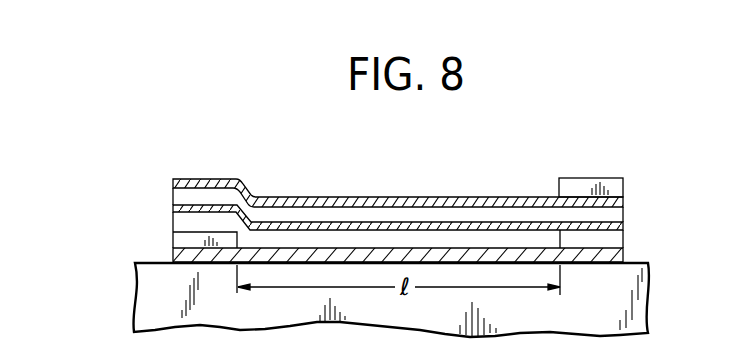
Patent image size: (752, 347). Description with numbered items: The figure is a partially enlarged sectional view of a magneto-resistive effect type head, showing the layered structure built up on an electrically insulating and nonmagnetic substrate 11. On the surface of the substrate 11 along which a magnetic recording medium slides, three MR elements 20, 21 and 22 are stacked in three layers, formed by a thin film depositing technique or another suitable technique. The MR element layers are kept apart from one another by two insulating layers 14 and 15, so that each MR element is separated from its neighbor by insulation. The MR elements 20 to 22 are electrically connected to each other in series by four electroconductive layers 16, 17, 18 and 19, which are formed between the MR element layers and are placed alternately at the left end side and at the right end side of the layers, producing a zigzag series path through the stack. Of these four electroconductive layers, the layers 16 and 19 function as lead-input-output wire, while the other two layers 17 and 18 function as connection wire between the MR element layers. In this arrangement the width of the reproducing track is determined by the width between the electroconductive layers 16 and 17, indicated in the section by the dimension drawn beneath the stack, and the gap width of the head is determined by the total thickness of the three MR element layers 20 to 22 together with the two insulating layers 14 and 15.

The substrate 11 is at (641, 305).
The insulating layer 14 is at (430, 240).
The insulating layer 15 is at (485, 215).
The electroconductive layer 16 is at (216, 240).
The electroconductive layer 17 is at (597, 240).
The electroconductive layer 18 is at (207, 197).
The electroconductive layer 19 is at (591, 186).
The MR element 20 is at (623, 255).
The MR element 21 is at (623, 226).
The MR element 22 is at (623, 200).